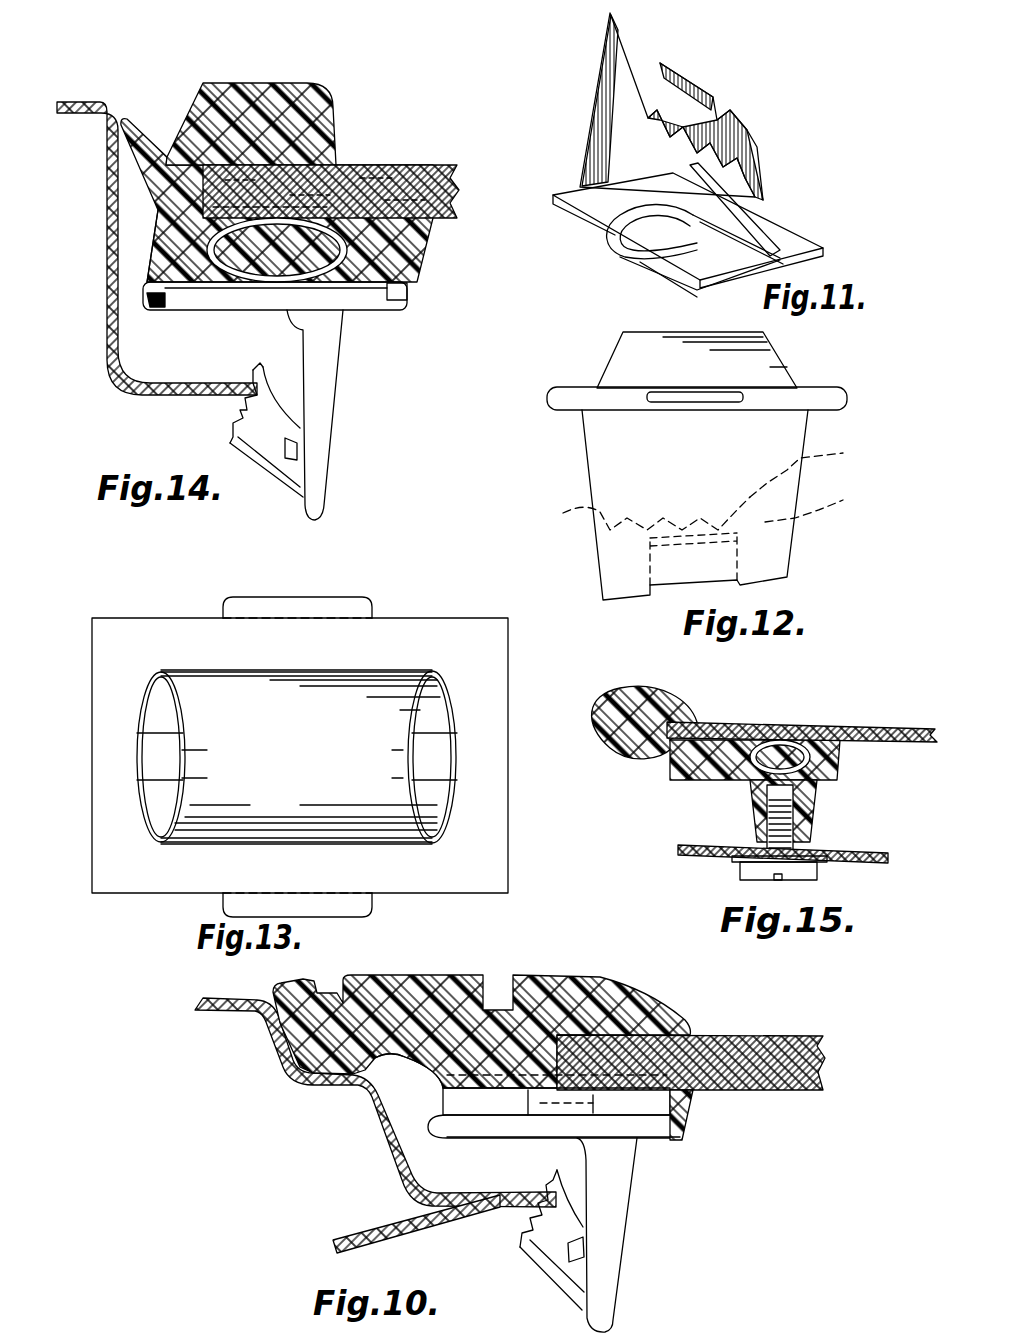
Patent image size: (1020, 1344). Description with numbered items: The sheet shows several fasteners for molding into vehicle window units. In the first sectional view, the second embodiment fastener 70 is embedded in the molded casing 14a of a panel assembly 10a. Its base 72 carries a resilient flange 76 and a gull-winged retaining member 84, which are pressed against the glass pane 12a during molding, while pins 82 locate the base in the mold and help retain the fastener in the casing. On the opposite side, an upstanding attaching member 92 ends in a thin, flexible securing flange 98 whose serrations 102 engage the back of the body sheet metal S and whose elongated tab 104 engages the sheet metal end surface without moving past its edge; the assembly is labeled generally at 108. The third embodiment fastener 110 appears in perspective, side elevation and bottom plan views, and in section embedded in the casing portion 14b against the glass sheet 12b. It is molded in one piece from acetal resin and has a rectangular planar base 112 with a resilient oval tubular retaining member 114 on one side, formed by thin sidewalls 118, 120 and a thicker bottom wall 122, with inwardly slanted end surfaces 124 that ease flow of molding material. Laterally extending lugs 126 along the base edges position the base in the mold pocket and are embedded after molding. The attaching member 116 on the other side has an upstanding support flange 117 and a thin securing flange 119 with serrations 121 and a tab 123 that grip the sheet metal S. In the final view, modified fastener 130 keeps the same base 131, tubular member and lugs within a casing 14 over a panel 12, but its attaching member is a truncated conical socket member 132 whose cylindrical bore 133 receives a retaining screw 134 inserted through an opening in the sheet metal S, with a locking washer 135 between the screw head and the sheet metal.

In FIG. 10, the panel assembly 10a is at (612, 971).
In FIG. 10, the glass pane 12a is at (787, 1083).
In FIG. 10, the molded casing 14a is at (548, 973).
In FIG. 10, the fastener 70 is at (635, 1170).
In FIG. 10, the base 72 is at (503, 1134).
In FIG. 10, the resilient flange 76 is at (650, 1107).
In FIG. 10, the pins 82 is at (427, 1122).
In FIG. 10, the retaining member 84 is at (457, 1092).
In FIG. 10, the attaching member 92 is at (605, 1283).
In FIG. 10, the securing flange 98 is at (547, 1248).
In FIG. 10, the serrations 102 is at (527, 1230).
In FIG. 10, the tab 104 is at (550, 1183).
In FIG. 15, the body sheet metal S is at (873, 848).
In FIG. 10, the body sheet metal S is at (437, 1118).
In FIG. 14, the trim assembly 108 is at (351, 138).
In FIG. 14, the fastener 110 is at (368, 317).
In FIG. 11, the fastener 110 is at (732, 102).
In FIG. 12, the fastener 110 is at (802, 552).
In FIG. 13, the fastener 110 is at (438, 903).
In FIG. 14, the base 112 is at (250, 297).
In FIG. 11, the base 112 is at (793, 233).
In FIG. 12, the base 112 is at (827, 400).
In FIG. 13, the base 112 is at (492, 842).
In FIG. 14, the tubular retaining member 114 is at (204, 230).
In FIG. 11, the tubular retaining member 114 is at (764, 263).
In FIG. 12, the tubular retaining member 114 is at (759, 328).
In FIG. 13, the tubular retaining member 114 is at (378, 667).
In FIG. 14, the attaching member 116 is at (332, 477).
In FIG. 11, the attaching member 116 is at (645, 50).
In FIG. 12, the attaching member 116 is at (612, 467).
In FIG. 14, the support flange 117 is at (317, 412).
In FIG. 11, the support flange 117 is at (663, 167).
In FIG. 12, the support flange 117 is at (703, 484).
In FIG. 14, the sidewall 118 is at (417, 257).
In FIG. 11, the sidewall 118 is at (633, 262).
In FIG. 12, the sidewall 118 is at (690, 382).
In FIG. 13, the sidewall 118 is at (185, 843).
In FIG. 14, the securing flange 119 is at (267, 443).
In FIG. 11, the securing flange 119 is at (733, 130).
In FIG. 12, the securing flange 119 is at (821, 506).
In FIG. 14, the sidewall 120 is at (152, 253).
In FIG. 11, the sidewall 120 is at (743, 260).
In FIG. 13, the sidewall 120 is at (198, 670).
In FIG. 14, the serrations 121 is at (232, 417).
In FIG. 12, the serrations 121 is at (638, 517).
In FIG. 14, the bottom wall 122 is at (320, 213).
In FIG. 11, the bottom wall 122 is at (713, 271).
In FIG. 12, the bottom wall 122 is at (640, 333).
In FIG. 13, the bottom wall 122 is at (307, 771).
In FIG. 14, the tab 123 is at (250, 370).
In FIG. 11, the tab 123 is at (750, 187).
In FIG. 12, the tab 123 is at (812, 470).
In FIG. 11, the end surfaces 124 is at (608, 241).
In FIG. 12, the end surfaces 124 is at (610, 355).
In FIG. 13, the end surfaces 124 is at (180, 748).
In FIG. 14, the lugs 126 is at (147, 307).
In FIG. 11, the lugs 126 is at (773, 220).
In FIG. 12, the lugs 126 is at (690, 412).
In FIG. 13, the lugs 126 is at (318, 563).
In FIG. 14, the glass sheet 12b is at (433, 212).
In FIG. 14, the molded casing portion 14b is at (233, 93).
In FIG. 15, the casing 14 is at (610, 683).
In FIG. 15, the panel 12 is at (908, 748).
In FIG. 15, the fastener 130 is at (687, 800).
In FIG. 15, the base 131 is at (838, 765).
In FIG. 15, the socket member 132 is at (807, 822).
In FIG. 15, the cylindrical bore 133 is at (771, 794).
In FIG. 15, the retaining screw 134 is at (808, 877).
In FIG. 15, the locking washer 135 is at (740, 860).